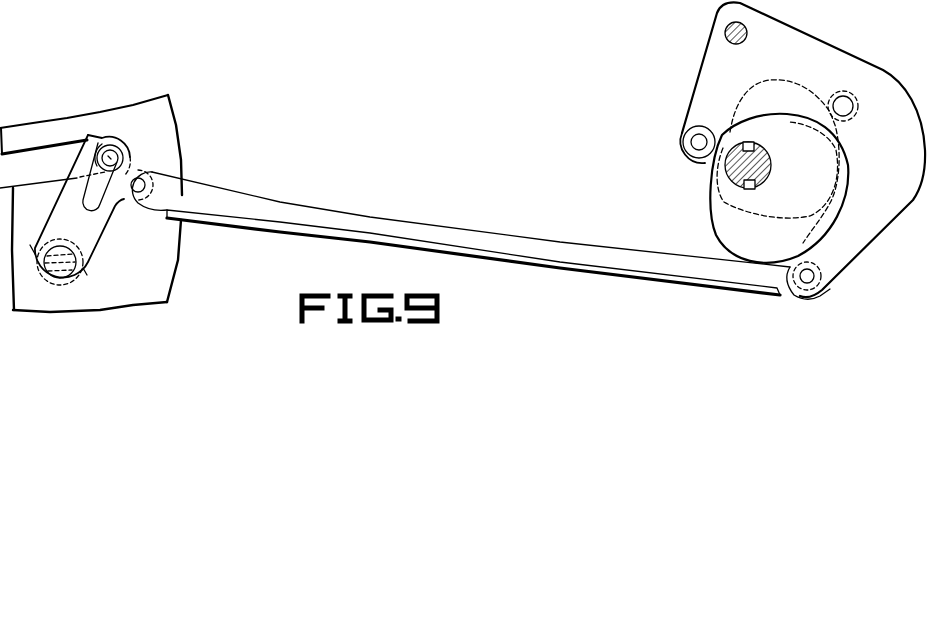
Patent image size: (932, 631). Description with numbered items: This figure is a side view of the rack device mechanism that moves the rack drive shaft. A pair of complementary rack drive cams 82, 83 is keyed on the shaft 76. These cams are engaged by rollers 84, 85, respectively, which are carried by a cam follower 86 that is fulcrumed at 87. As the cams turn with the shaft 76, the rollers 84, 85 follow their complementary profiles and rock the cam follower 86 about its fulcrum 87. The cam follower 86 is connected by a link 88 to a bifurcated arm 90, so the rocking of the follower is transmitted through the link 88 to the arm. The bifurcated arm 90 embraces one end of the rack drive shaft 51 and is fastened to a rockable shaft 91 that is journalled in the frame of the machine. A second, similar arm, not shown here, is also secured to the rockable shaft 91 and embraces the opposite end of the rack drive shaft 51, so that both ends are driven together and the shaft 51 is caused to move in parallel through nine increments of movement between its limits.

The rack drive shaft 51 is at (114, 154).
The shaft 76 is at (767, 160).
The rack drive cam 82 is at (712, 225).
The rack drive cam 83 is at (798, 80).
The roller 84 is at (690, 142).
The roller 85 is at (858, 94).
The cam follower 86 is at (698, 90).
The fulcrum 87 is at (727, 25).
The link 88 is at (516, 216).
The bifurcated arm 90 is at (96, 230).
The rockable shaft 91 is at (58, 279).